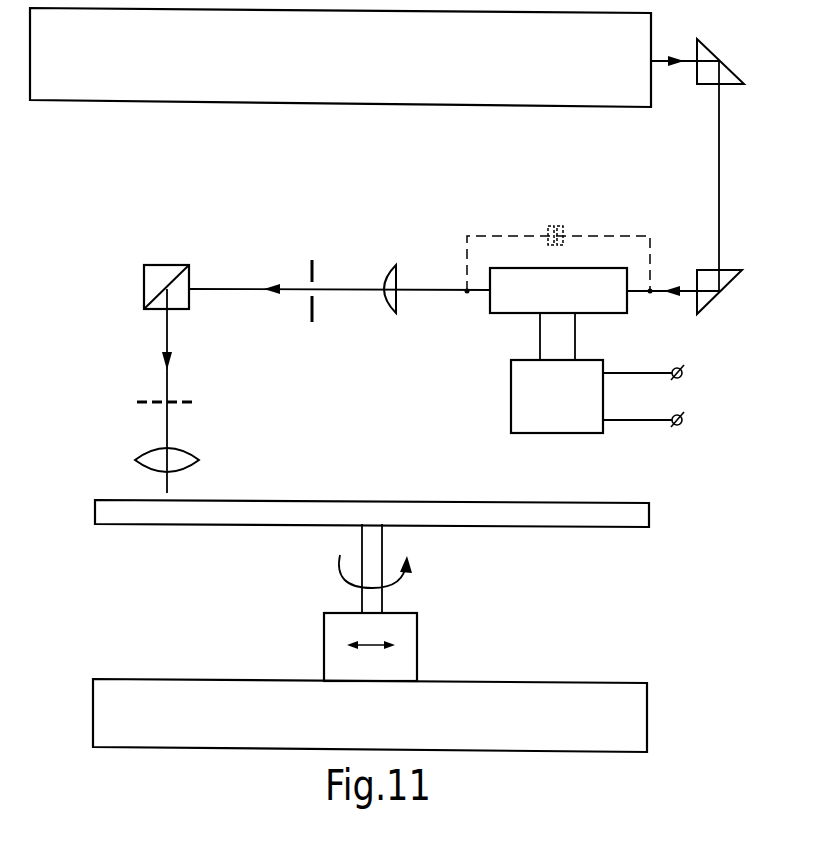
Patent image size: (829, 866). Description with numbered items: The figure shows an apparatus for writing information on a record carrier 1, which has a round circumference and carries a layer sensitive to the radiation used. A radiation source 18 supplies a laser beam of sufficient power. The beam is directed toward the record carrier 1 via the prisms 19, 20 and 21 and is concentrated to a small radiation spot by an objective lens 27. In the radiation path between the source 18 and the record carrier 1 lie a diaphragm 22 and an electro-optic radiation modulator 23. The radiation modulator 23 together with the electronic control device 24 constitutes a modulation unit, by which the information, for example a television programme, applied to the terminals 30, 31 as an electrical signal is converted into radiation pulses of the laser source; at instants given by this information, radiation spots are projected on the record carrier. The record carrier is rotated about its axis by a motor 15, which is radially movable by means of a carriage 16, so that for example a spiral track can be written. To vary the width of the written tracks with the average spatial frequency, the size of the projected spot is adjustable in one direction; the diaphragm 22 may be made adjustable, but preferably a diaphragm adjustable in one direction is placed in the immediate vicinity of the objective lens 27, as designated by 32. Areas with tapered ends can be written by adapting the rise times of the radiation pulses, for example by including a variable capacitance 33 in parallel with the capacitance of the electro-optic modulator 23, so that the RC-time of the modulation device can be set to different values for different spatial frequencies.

The record carrier 1 is at (551, 508).
The motor 15 is at (420, 644).
The carriage 16 is at (598, 683).
The radiation source 18 is at (341, 75).
The prism 19 is at (705, 52).
The prism 20 is at (705, 277).
The prism 21 is at (163, 263).
The diaphragm 22 is at (310, 265).
The electro-optic radiation modulator 23 is at (500, 279).
The electronic control device 24 is at (517, 410).
The objective lens 27 is at (196, 463).
The terminal 30 is at (683, 373).
The terminal 31 is at (683, 425).
The diaphragm adjustable in one direction 32 is at (190, 400).
The variable capacitance 33 is at (552, 226).